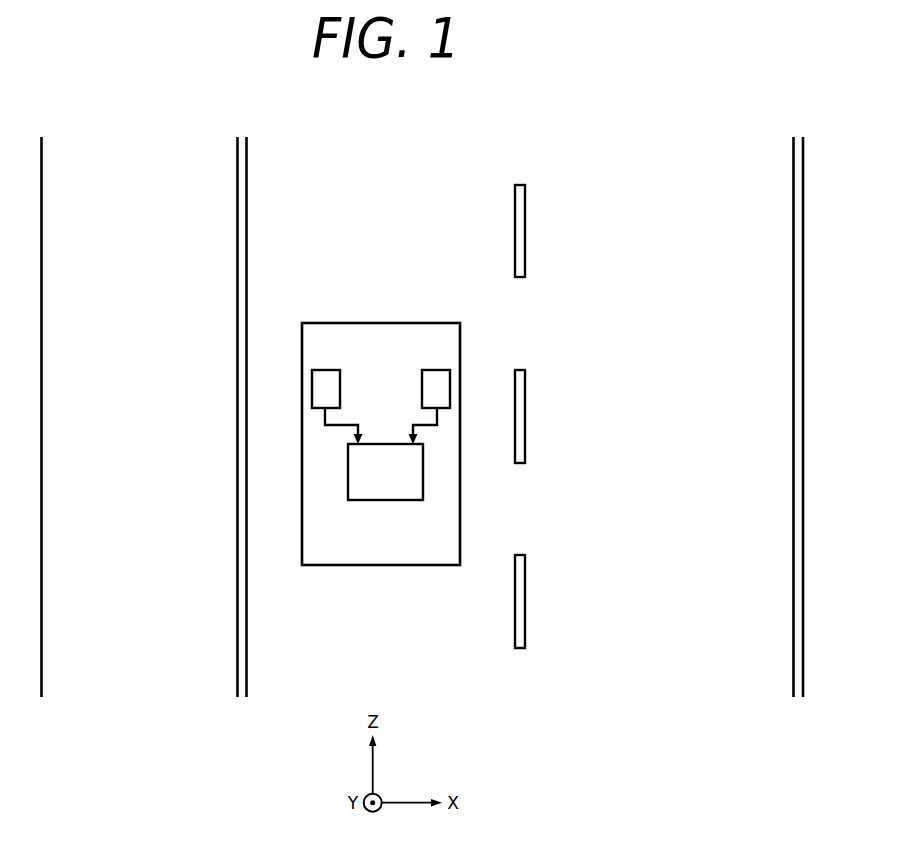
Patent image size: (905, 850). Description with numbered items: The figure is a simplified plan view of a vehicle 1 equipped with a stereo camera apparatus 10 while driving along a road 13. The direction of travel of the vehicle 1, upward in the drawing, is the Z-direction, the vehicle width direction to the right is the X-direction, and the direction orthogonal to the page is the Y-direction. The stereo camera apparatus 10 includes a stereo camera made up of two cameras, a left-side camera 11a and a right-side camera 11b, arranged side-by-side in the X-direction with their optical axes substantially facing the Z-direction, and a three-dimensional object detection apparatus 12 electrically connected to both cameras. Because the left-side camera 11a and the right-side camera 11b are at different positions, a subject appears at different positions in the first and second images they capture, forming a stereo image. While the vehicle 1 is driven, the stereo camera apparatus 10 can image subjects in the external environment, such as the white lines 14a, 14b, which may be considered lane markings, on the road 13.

The vehicle 1 is at (460, 492).
The stereo camera apparatus 10 is at (412, 419).
The left-side camera 11a is at (325, 370).
The right-side camera 11b is at (424, 370).
The three-dimensional object detection apparatus 12 is at (387, 501).
The road 13 is at (395, 214).
The white line 14a is at (237, 267).
The white line 14b is at (525, 235).